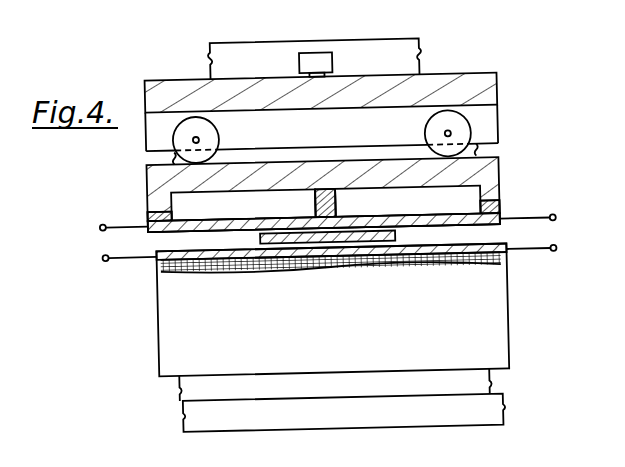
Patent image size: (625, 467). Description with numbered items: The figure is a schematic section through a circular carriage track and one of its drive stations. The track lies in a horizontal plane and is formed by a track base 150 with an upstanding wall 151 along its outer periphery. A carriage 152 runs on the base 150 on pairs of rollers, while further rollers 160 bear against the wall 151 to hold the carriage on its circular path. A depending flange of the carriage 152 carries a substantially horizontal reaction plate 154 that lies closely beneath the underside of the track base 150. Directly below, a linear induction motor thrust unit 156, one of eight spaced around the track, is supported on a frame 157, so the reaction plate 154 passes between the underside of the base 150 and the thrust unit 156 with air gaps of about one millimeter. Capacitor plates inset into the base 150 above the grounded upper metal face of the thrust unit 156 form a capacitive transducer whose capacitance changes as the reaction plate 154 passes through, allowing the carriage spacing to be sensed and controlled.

The track base 150 is at (351, 191).
The upstanding wall 151 is at (216, 54).
The carriage 152 is at (350, 114).
The reaction plate 154 is at (363, 238).
The linear induction motor thrust unit 156 is at (358, 310).
The frame 157 is at (382, 424).
The roller 160 is at (315, 53).